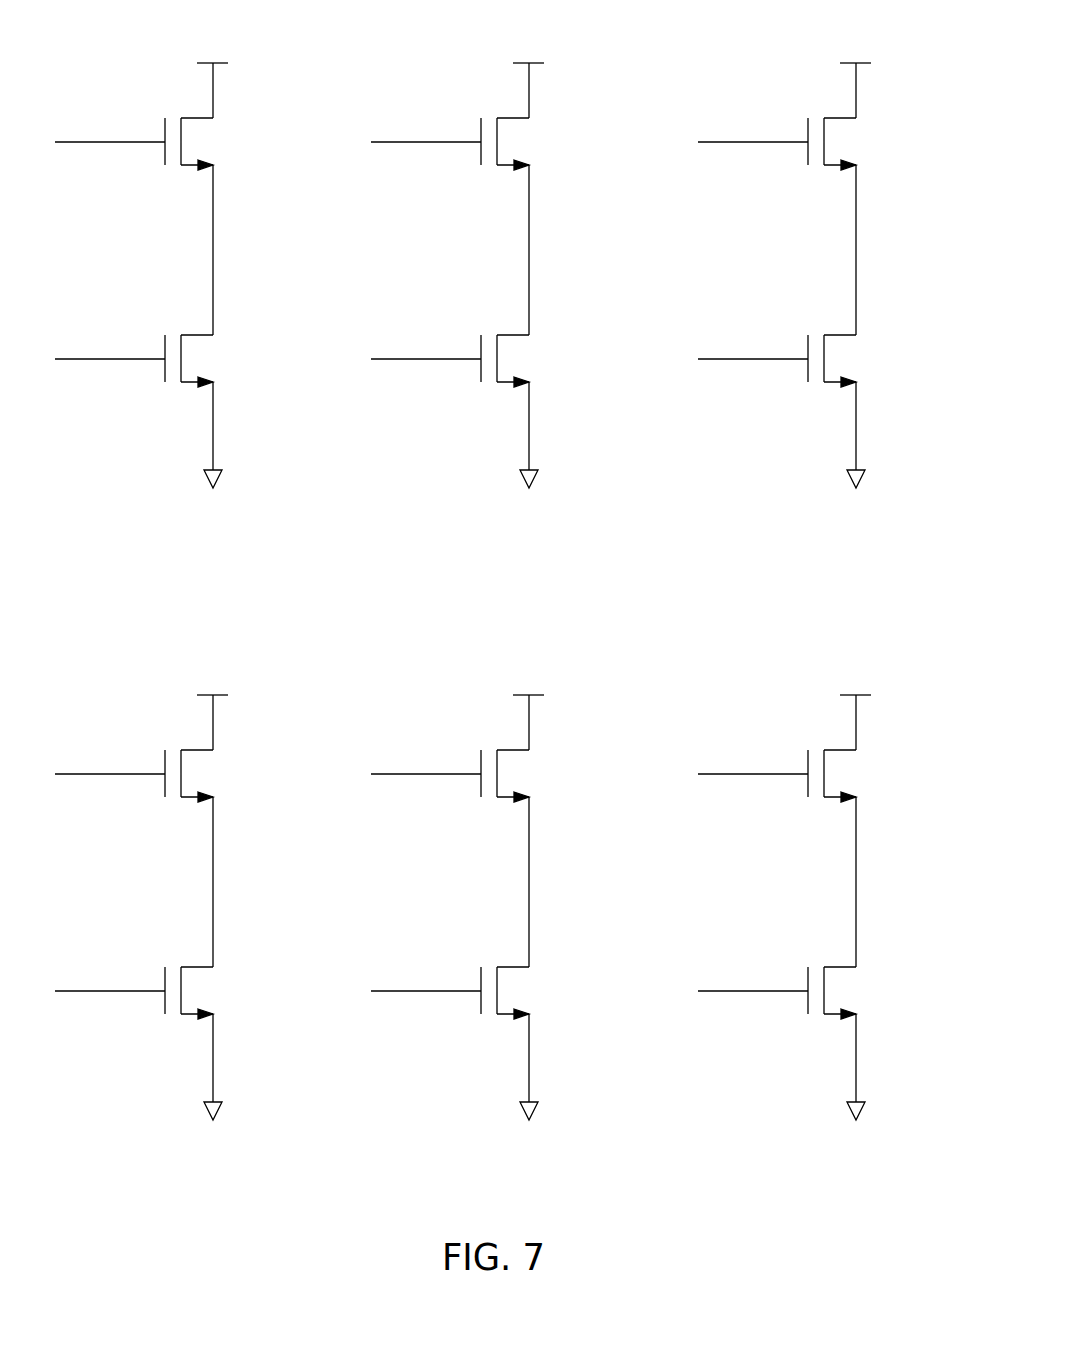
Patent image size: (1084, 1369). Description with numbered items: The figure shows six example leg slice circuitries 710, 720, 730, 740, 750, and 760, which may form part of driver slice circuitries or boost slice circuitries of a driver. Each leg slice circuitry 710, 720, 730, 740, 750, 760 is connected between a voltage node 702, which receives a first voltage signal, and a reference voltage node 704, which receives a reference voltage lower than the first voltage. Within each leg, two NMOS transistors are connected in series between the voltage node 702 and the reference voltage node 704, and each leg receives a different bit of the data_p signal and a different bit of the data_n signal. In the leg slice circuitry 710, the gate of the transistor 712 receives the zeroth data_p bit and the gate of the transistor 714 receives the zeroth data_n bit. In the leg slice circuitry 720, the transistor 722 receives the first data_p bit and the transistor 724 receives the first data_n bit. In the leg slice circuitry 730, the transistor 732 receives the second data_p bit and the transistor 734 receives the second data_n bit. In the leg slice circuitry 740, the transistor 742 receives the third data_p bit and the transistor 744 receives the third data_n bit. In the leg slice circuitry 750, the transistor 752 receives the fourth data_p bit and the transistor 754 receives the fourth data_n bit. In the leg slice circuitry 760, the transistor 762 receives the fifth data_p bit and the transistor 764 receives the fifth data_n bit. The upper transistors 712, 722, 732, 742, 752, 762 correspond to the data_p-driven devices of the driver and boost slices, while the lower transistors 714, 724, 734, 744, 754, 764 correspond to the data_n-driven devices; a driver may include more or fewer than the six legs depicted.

The voltage node 702 is at (533, 362).
The reference voltage node 704 is at (198, 483).
The leg slice circuitry 710 is at (179, 235).
The transistor 712 is at (215, 140).
The transistor 714 is at (215, 357).
The leg slice circuitry 720 is at (495, 235).
The transistor 722 is at (499, 144).
The transistor 724 is at (499, 361).
The leg slice circuitry 730 is at (822, 235).
The transistor 732 is at (826, 144).
The transistor 734 is at (826, 361).
The leg slice circuitry 740 is at (179, 864).
The transistor 742 is at (183, 776).
The transistor 744 is at (183, 993).
The leg slice circuitry 750 is at (495, 864).
The transistor 752 is at (499, 776).
The transistor 754 is at (499, 993).
The leg slice circuitry 760 is at (822, 864).
The transistor 762 is at (826, 776).
The transistor 764 is at (826, 993).